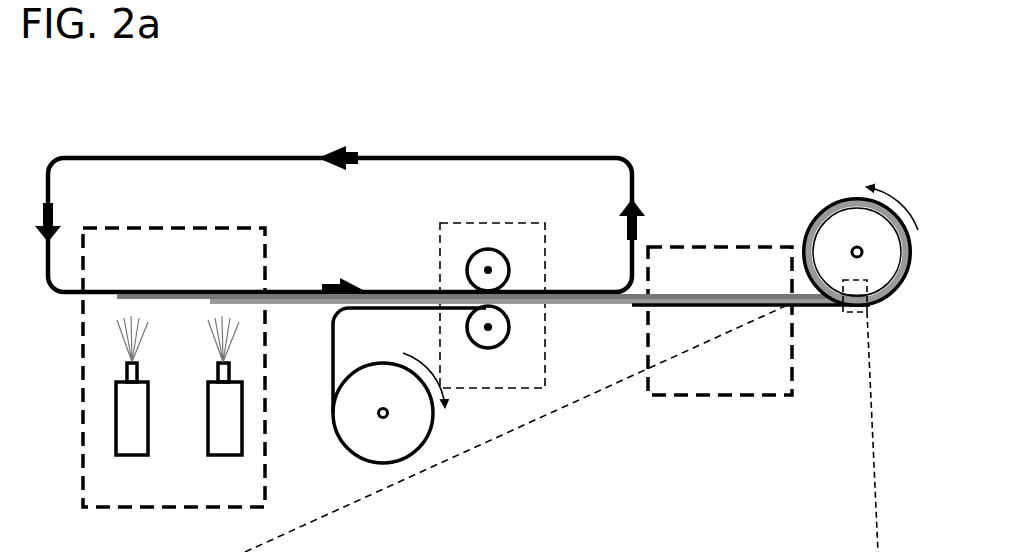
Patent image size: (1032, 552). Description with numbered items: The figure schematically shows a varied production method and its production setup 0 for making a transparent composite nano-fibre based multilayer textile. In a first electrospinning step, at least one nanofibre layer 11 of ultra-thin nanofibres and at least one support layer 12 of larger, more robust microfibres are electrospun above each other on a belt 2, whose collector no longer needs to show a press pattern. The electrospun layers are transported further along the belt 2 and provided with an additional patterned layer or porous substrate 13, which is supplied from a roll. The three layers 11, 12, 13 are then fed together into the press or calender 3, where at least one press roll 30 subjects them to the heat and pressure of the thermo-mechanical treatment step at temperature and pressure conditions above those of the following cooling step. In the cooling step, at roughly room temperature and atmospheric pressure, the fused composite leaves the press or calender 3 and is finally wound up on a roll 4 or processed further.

The production setup 0 is at (130, 146).
The belt 2 is at (210, 157).
The press/calender 3 is at (453, 210).
The press roll 30 is at (520, 262).
The nanofibre layer 11 is at (668, 293).
The support layer 12 is at (727, 302).
The patterned layer/porous substrate 13 is at (371, 425).
The roll 4 is at (885, 265).